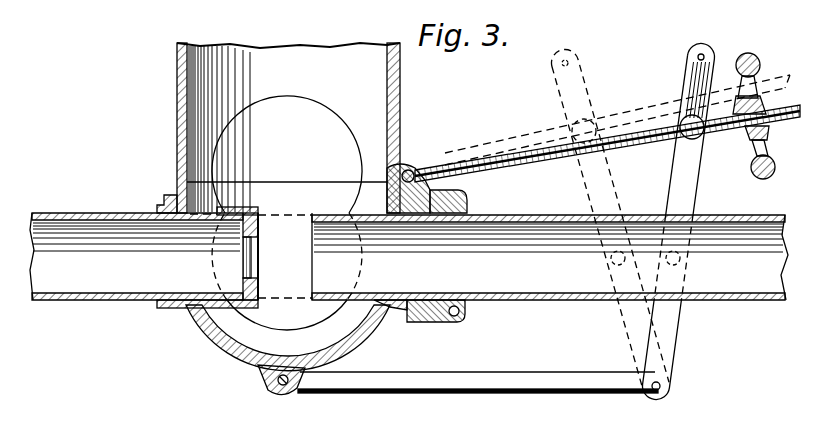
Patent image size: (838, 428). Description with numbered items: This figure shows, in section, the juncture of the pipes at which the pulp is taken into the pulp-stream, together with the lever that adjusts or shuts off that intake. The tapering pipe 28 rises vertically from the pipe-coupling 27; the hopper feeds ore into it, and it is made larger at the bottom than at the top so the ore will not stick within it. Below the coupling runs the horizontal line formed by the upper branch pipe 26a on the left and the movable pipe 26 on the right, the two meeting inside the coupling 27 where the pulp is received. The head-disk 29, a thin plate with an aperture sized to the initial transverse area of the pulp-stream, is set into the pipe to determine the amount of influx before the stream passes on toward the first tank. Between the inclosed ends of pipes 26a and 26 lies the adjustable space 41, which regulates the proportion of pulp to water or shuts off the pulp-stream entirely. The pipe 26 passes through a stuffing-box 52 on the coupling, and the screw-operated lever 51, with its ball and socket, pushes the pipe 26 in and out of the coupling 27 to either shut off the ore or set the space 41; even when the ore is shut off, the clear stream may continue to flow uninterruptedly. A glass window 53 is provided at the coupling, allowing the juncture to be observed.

The pipe 26 is at (550, 256).
The upper branch pipe 26a is at (136, 256).
The pipe-coupling 27 is at (407, 295).
The pipe 28 is at (177, 112).
The head-disk 29 is at (246, 281).
The adjustable space 41 is at (251, 256).
The screw-operated lever 51 is at (670, 184).
The stuffing-box 52 is at (409, 320).
The glass window 53 is at (321, 192).